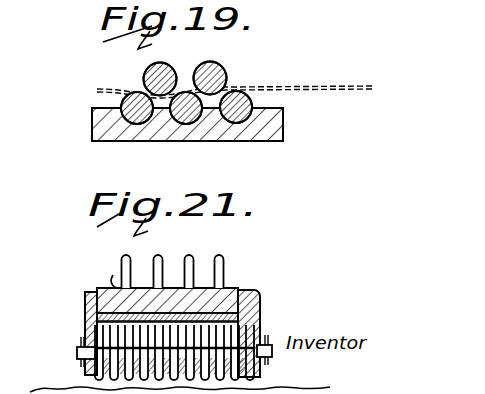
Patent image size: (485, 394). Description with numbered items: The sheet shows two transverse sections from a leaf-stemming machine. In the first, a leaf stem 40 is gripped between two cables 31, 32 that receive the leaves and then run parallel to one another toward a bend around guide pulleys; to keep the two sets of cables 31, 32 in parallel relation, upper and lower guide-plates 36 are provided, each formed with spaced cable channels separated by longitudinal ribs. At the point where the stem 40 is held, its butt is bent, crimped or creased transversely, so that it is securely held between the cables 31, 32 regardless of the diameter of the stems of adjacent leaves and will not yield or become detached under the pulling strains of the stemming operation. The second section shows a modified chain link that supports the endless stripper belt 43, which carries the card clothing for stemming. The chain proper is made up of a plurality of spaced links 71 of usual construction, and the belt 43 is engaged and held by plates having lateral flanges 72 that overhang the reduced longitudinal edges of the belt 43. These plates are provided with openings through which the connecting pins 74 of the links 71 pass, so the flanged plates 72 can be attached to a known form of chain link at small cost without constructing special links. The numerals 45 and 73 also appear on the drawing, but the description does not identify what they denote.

In FIG. 19, the cable 31 is at (143, 71).
In FIG. 19, the cable 32 is at (244, 100).
In FIG. 19, the guide-plate 36 is at (92, 135).
In FIG. 19, the leaf stem 40 is at (97, 90).
In FIG. 21, the stripper belt 43 is at (121, 260).
In FIG. 21, the pins 45 is at (188, 267).
In FIG. 21, the link 71 is at (92, 373).
In FIG. 21, the lateral flange 72 is at (87, 313).
In FIG. 21, the end block 73 is at (90, 289).
In FIG. 21, the connecting pin 74 is at (77, 352).